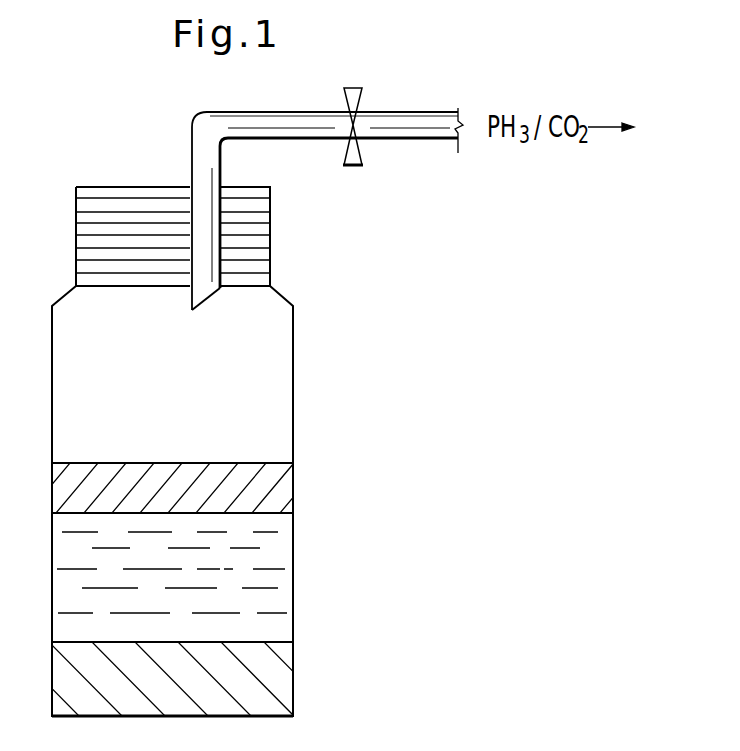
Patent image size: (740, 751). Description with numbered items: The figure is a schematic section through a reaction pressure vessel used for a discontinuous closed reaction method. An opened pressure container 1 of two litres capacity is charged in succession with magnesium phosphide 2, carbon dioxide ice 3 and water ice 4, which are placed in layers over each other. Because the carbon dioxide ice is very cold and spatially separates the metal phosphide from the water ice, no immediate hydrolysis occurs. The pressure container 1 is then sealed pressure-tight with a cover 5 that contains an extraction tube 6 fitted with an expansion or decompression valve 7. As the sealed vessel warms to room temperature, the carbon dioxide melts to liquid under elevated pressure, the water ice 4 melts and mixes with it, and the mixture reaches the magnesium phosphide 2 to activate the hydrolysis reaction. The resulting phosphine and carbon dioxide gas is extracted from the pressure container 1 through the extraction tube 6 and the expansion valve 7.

The pressure container 1 is at (50, 359).
The magnesium phosphide 2 is at (265, 680).
The carbon dioxide ice 3 is at (257, 580).
The water ice 4 is at (255, 502).
The cover 5 is at (132, 227).
The extraction tube 6 is at (207, 155).
The expansion valve 7 is at (355, 155).